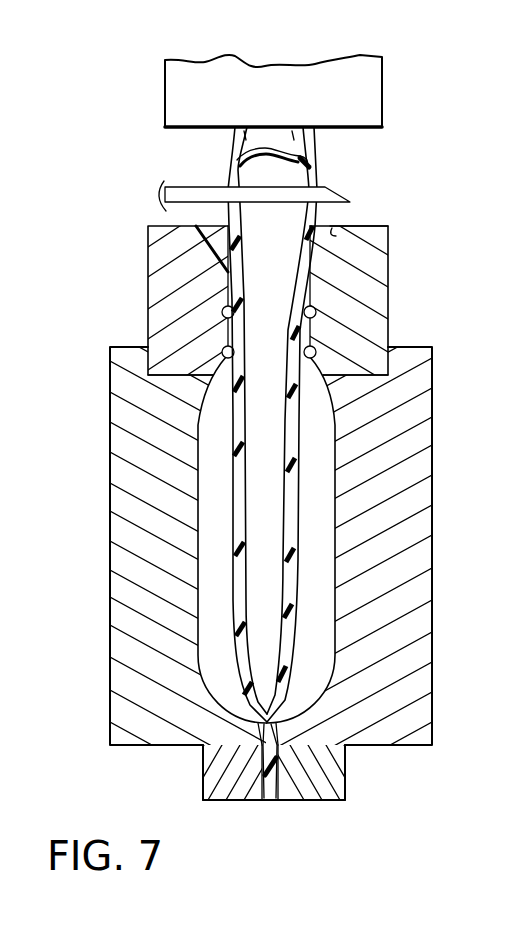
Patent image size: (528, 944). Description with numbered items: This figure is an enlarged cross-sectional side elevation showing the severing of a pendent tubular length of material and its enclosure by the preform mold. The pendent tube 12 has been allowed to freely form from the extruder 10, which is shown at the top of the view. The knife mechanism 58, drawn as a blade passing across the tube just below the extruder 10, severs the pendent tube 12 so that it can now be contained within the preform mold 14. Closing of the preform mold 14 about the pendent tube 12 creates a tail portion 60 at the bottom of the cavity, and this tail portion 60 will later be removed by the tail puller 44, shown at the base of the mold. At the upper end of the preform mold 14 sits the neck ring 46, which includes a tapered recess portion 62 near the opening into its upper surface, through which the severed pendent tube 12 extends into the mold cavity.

The extruder 10 is at (163, 110).
The pendent tube 12 is at (232, 402).
The preform mold 14 is at (433, 372).
The tail puller 44 is at (345, 778).
The neck ring 46 is at (390, 308).
The knife mechanism 58 is at (160, 190).
The tail portion 60 is at (279, 804).
The tapered recess portion 62 is at (335, 225).